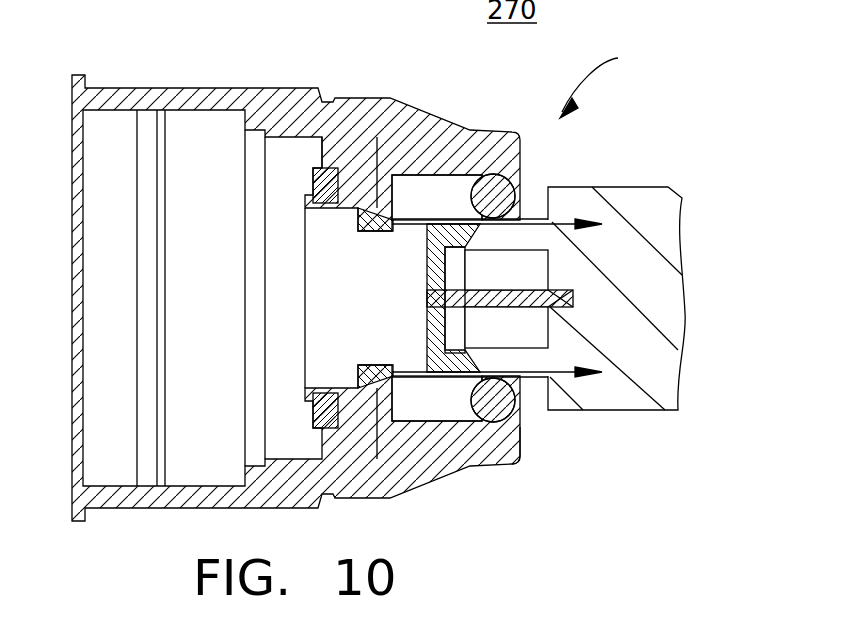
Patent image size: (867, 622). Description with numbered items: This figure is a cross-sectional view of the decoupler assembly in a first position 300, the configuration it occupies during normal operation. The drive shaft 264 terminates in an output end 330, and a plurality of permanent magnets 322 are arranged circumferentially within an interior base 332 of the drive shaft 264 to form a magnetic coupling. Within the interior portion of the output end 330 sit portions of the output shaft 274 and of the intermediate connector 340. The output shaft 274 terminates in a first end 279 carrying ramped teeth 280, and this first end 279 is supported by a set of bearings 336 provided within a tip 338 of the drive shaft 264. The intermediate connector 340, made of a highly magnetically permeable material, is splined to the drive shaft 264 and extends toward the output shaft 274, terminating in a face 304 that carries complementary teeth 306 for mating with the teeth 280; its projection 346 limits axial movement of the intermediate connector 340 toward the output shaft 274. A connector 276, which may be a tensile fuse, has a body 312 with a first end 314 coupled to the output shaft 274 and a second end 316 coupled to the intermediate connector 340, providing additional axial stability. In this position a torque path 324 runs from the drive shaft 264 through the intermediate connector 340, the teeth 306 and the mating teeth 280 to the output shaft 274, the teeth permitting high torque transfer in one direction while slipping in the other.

The drive shaft 264 is at (263, 97).
The permanent magnets 322 is at (338, 168).
The interior base 332 is at (312, 412).
The first position 300 is at (615, 82).
The intermediate connector 340 is at (447, 212).
The output end 330 is at (422, 465).
The bearings 336 is at (518, 200).
The torque path 324 is at (528, 212).
The teeth 280 is at (522, 383).
The output shaft 274 is at (652, 218).
The projection 346 is at (357, 222).
The first end 279 is at (572, 238).
The complementary teeth 306 is at (437, 258).
The body 312 is at (468, 290).
The face 304 is at (472, 367).
The first end 314 is at (574, 302).
The second end 316 is at (427, 296).
The connector 276 is at (573, 327).
The tip 338 is at (520, 445).